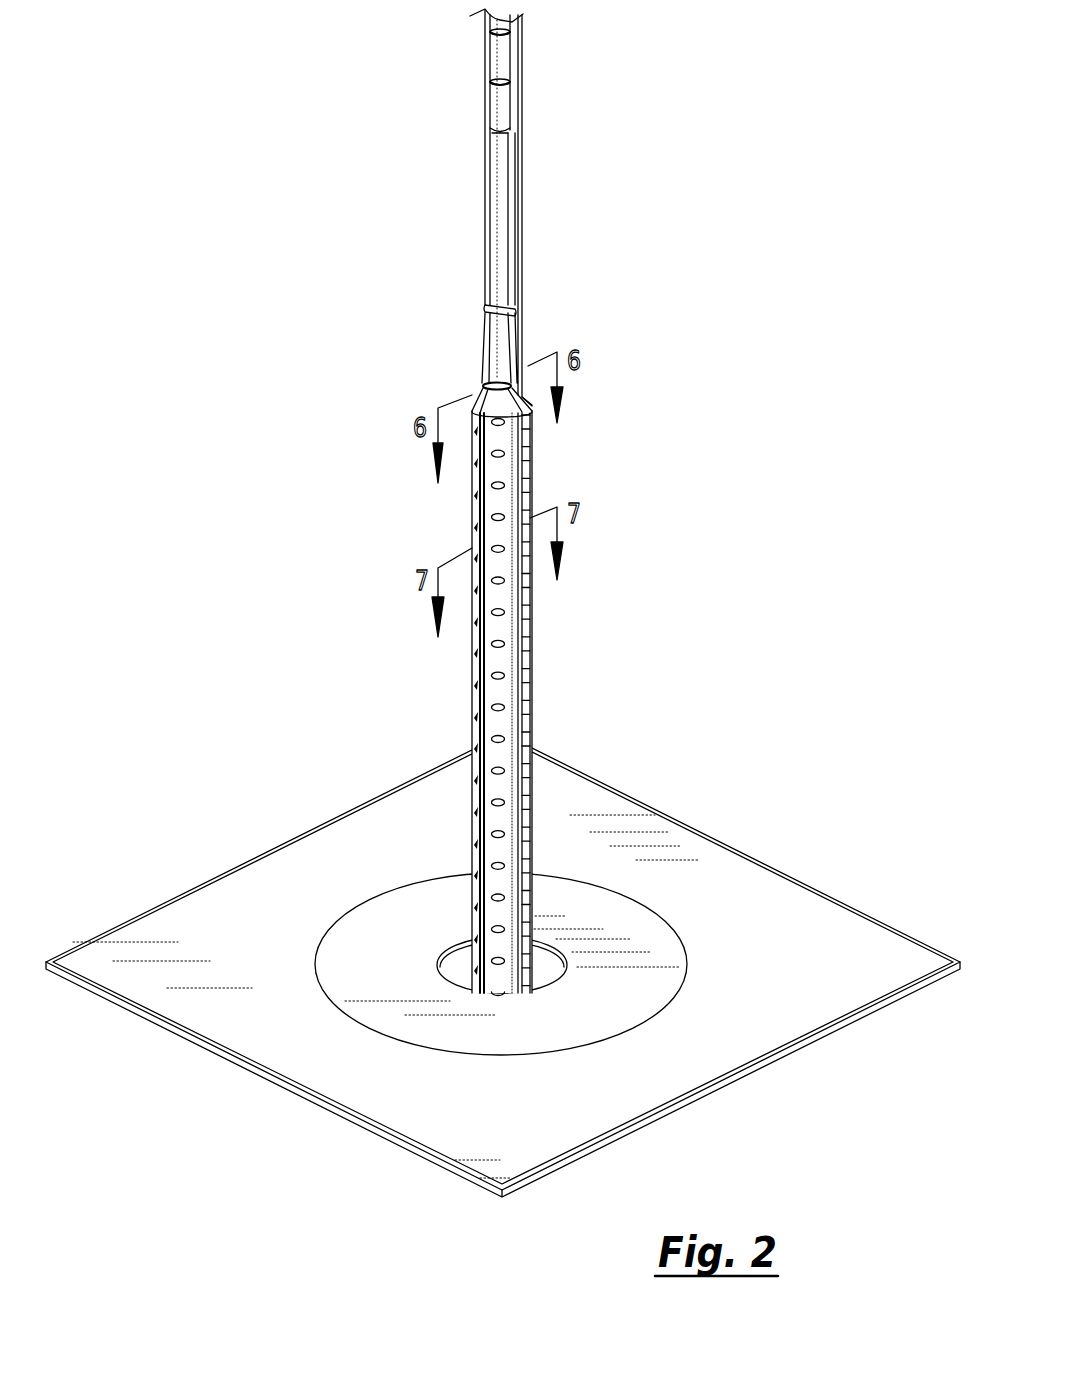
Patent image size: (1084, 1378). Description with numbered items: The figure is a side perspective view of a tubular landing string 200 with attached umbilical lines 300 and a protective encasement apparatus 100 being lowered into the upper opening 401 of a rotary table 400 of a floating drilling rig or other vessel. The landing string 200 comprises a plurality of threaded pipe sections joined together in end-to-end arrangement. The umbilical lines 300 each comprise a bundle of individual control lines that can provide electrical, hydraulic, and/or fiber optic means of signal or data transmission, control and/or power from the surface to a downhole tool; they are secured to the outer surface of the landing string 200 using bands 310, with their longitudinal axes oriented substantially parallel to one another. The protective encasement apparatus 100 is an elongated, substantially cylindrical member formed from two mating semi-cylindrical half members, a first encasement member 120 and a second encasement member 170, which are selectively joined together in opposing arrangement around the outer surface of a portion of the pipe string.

The protective encasement apparatus 100 is at (513, 689).
The first encasement member 120 is at (468, 687).
The second encasement member 170 is at (505, 722).
The tubular landing string 200 is at (497, 183).
The umbilical lines 300 is at (514, 218).
The bands 310 is at (489, 309).
The rotary table 400 is at (457, 963).
The upper opening 401 is at (613, 912).